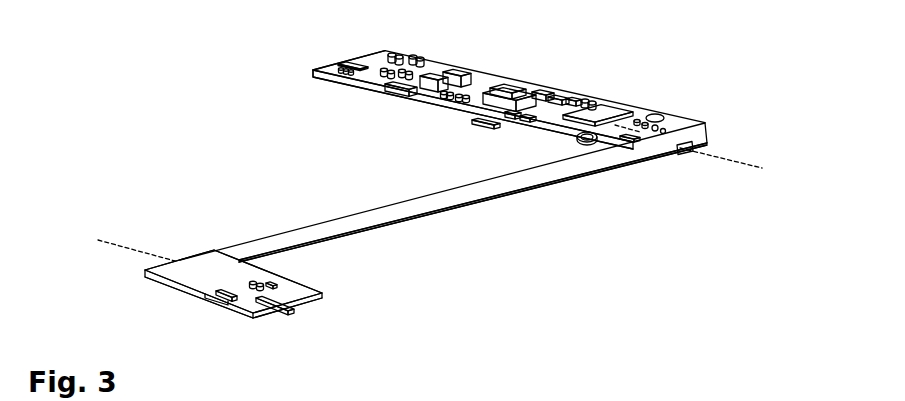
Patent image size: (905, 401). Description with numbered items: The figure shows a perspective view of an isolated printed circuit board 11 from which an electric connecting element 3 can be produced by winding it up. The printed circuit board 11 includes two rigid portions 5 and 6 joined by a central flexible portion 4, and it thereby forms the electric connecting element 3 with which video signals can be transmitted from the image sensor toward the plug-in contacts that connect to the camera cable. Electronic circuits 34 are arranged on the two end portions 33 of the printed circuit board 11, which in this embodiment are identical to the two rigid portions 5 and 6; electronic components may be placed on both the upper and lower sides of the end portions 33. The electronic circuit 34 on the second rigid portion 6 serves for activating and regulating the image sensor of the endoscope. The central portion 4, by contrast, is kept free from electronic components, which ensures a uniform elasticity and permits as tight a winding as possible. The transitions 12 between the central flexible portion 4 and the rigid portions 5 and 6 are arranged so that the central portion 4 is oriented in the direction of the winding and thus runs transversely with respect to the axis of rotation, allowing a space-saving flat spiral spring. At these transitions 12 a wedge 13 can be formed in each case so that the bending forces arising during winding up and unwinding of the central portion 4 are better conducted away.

The electric connecting element 3 is at (347, 222).
The central flexible portion 4 is at (420, 213).
The first rigid portion 5 is at (192, 275).
The second rigid portion 6 is at (682, 132).
The printed circuit board 11 is at (230, 92).
The transitions 12 is at (125, 247).
The wedge 13 is at (674, 160).
The end portions 33 is at (383, 60).
The electronic circuits 34 is at (507, 77).